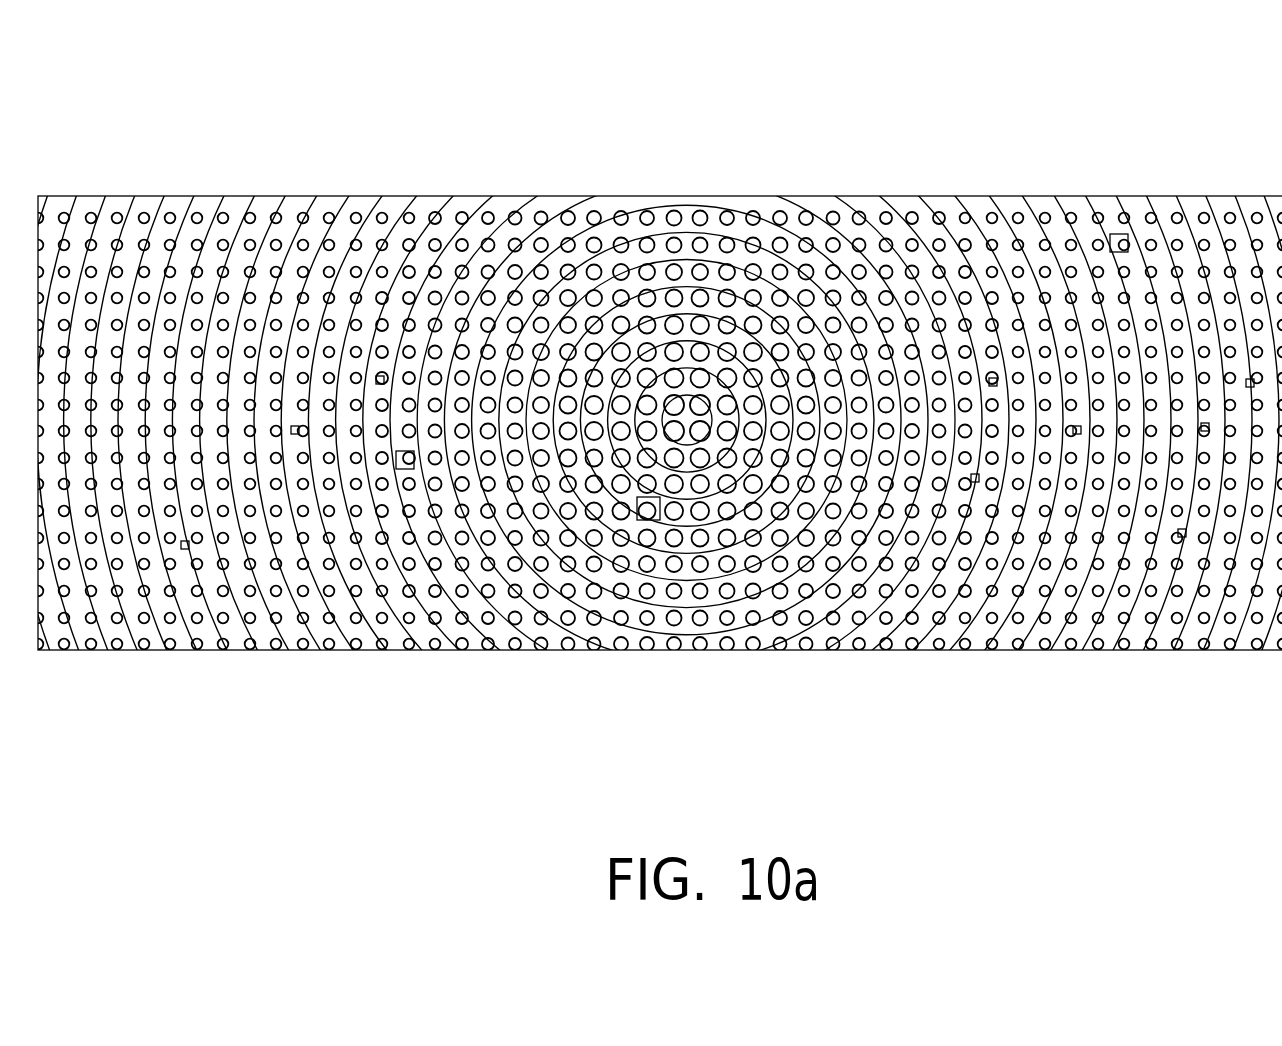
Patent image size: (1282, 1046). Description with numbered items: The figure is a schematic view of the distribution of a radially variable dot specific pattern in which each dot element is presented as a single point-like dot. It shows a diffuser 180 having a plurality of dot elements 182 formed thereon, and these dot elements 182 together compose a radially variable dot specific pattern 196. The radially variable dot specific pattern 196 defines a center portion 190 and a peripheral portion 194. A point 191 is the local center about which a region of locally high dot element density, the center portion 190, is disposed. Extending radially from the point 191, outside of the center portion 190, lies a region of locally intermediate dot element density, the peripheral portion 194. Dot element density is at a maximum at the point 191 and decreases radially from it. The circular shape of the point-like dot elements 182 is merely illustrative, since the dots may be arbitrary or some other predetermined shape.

The diffuser 180 is at (231, 76).
The dot elements 182 is at (1110, 252).
The center portion 190 is at (780, 297).
The point 191 is at (687, 418).
The peripheral portion 194 is at (862, 196).
The radially variable dot specific pattern 196 is at (910, 108).